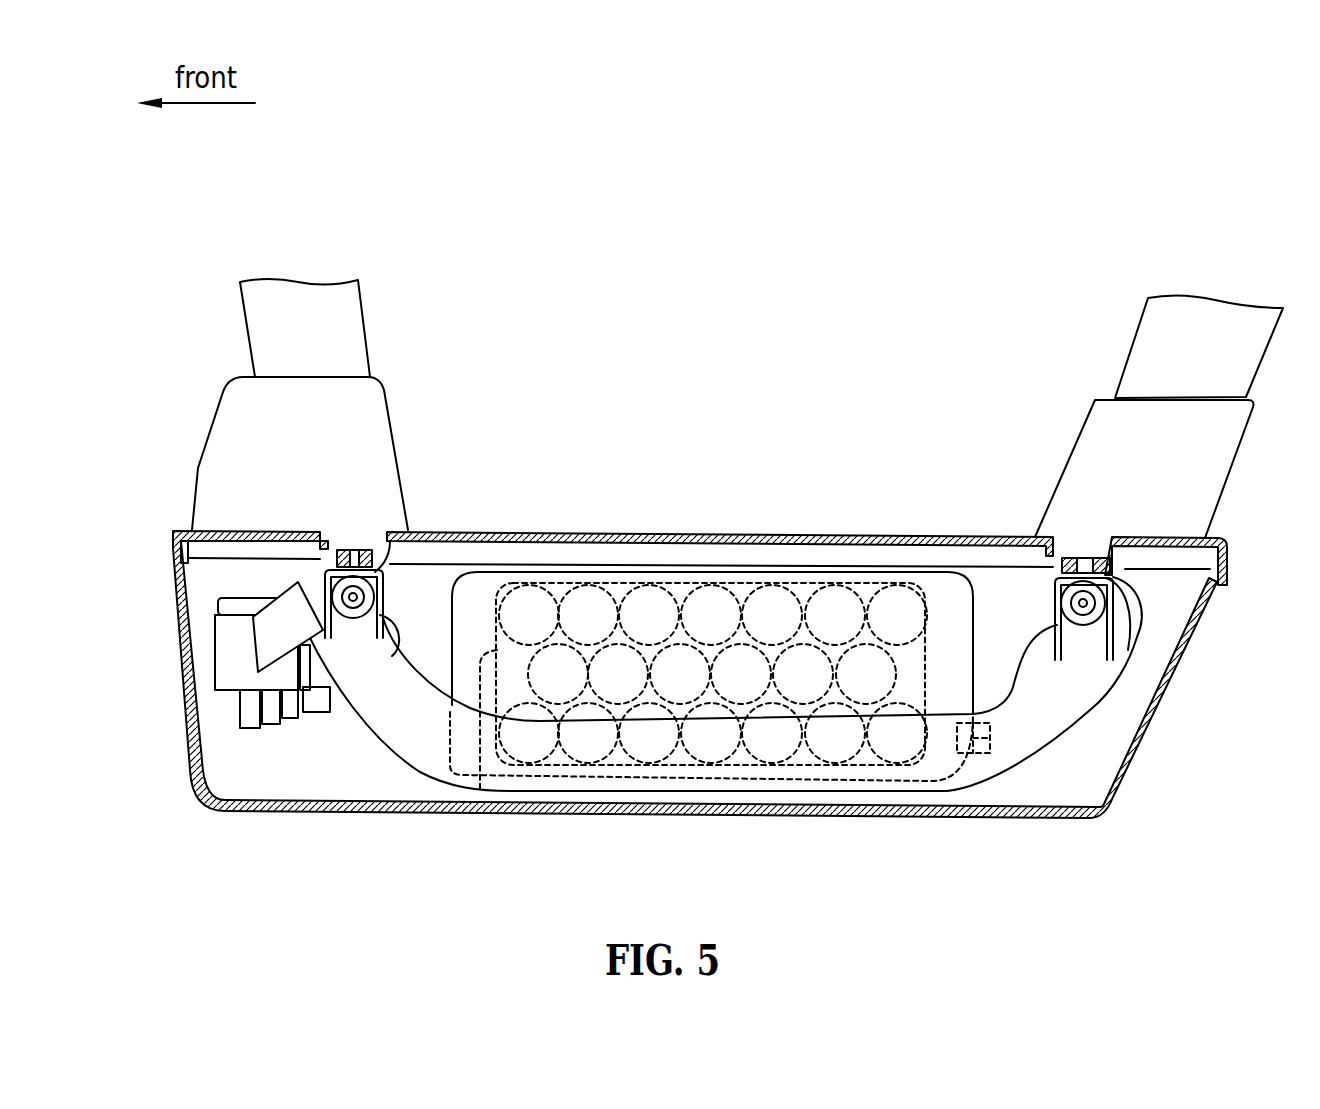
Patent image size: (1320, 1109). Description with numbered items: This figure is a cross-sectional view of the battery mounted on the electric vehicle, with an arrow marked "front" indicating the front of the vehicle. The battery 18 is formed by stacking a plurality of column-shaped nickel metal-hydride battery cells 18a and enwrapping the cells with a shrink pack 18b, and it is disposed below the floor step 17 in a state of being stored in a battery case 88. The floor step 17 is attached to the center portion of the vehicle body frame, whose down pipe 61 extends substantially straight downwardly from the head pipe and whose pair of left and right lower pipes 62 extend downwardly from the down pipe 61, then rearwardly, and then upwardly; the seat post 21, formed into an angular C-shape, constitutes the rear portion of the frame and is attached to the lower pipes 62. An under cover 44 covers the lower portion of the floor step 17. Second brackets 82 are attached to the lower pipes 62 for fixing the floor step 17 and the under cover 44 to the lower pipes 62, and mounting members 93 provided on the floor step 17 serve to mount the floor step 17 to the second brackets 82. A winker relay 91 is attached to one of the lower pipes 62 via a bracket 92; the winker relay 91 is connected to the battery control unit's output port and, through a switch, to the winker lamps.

The floor step 17 is at (955, 534).
The battery 18 is at (605, 565).
The battery cells 18a is at (800, 578).
The shrink pack 18b is at (480, 790).
The seat post 21 is at (1130, 350).
The under cover 44 is at (857, 818).
The down pipe 61 is at (240, 301).
The lower pipes 62 is at (396, 722).
The second brackets 82 is at (400, 623).
The battery case 88 is at (447, 630).
The winker relay 91 is at (217, 650).
The bracket 92 is at (288, 582).
The mounting members 93 is at (352, 525).